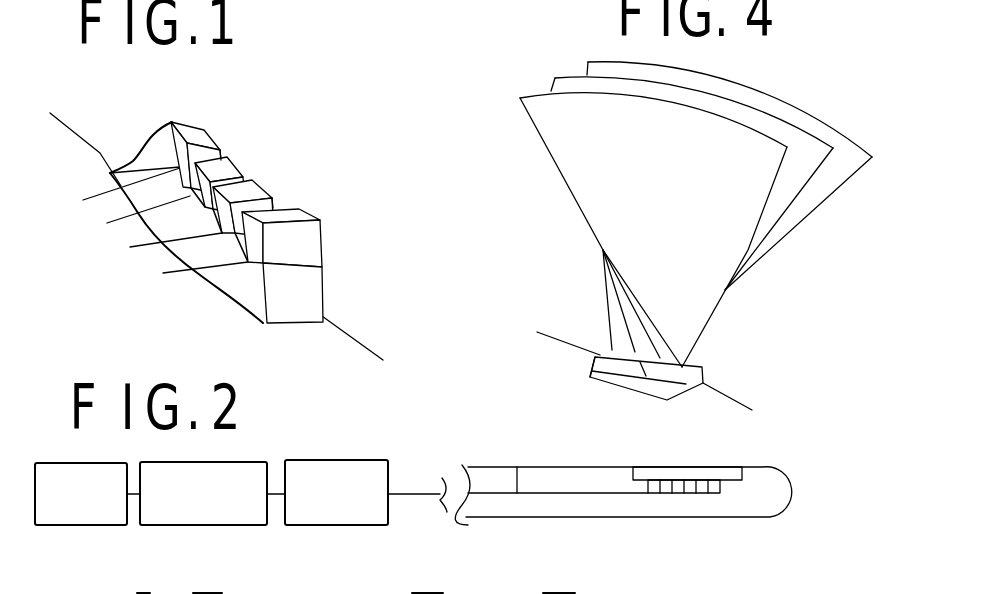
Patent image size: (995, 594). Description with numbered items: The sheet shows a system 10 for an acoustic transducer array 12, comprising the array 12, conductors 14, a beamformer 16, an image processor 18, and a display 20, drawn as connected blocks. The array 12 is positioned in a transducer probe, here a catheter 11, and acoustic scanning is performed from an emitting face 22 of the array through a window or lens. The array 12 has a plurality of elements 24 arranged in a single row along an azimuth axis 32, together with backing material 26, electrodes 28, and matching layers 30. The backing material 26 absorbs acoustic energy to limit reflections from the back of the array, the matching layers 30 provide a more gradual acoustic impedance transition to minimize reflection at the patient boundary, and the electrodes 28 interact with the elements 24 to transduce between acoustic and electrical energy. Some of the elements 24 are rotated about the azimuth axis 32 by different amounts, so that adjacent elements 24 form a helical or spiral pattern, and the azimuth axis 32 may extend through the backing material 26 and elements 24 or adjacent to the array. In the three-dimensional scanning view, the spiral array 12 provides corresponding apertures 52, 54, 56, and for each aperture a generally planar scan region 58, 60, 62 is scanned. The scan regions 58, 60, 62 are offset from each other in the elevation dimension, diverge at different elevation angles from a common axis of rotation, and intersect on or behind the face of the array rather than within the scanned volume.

In FIG. 2, the system 10 is at (442, 555).
In FIG. 2, the catheter 11 is at (763, 517).
In FIG. 1, the acoustic transducer array 12 is at (331, 235).
In FIG. 4, the acoustic transducer array 12 is at (703, 377).
In FIG. 2, the acoustic transducer array 12 is at (682, 467).
In FIG. 1, the conductors 14 is at (163, 273).
In FIG. 2, the conductors 14 is at (415, 494).
In FIG. 2, the beamformer 16 is at (322, 525).
In FIG. 2, the image processor 18 is at (217, 525).
In FIG. 2, the display 20 is at (88, 525).
In FIG. 1, the emitting face 22 is at (200, 140).
In FIG. 2, the emitting face 22 is at (723, 466).
In FIG. 1, the elements 24 is at (224, 156).
In FIG. 1, the backing material 26 is at (322, 293).
In FIG. 1, the electrodes 28 is at (305, 265).
In FIG. 1, the matching layers 30 is at (300, 212).
In FIG. 1, the azimuth axis 32 is at (81, 138).
In FIG. 4, the azimuth axis 32 is at (548, 336).
In FIG. 4, the aperture 52 is at (642, 393).
In FIG. 4, the aperture 54 is at (592, 378).
In FIG. 4, the aperture 56 is at (613, 350).
In FIG. 4, the scan region 58 is at (537, 97).
In FIG. 4, the scan region 60 is at (553, 82).
In FIG. 4, the scan region 62 is at (590, 63).